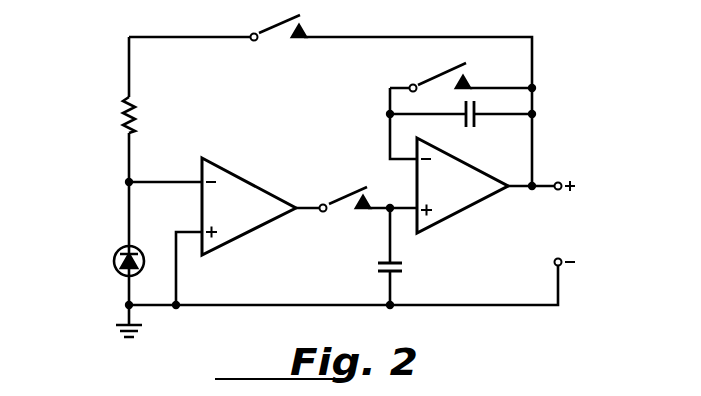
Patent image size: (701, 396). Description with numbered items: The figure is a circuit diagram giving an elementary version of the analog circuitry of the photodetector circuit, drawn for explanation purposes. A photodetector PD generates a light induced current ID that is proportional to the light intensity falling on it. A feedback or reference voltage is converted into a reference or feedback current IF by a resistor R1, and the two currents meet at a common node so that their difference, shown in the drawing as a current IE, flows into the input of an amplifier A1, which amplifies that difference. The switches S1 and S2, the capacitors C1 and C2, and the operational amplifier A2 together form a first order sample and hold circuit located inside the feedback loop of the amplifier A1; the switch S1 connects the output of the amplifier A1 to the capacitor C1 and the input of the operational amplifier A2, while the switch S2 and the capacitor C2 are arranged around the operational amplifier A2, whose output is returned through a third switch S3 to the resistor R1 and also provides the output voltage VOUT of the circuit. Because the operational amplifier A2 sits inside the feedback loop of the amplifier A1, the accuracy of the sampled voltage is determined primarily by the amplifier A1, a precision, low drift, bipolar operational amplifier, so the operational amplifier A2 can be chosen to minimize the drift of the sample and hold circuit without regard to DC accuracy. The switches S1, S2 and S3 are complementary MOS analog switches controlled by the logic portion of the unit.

The resistor R1 is at (124, 112).
The photodetector PD is at (113, 267).
The amplifier A1 is at (250, 216).
The operational amplifier A2 is at (459, 196).
The switch S1 is at (345, 210).
The switch S2 is at (432, 78).
The switch S3 is at (284, 31).
The capacitor C1 is at (402, 273).
The capacitor C2 is at (477, 120).
The feedback current IF is at (115, 137).
The light induced current ID is at (115, 190).
The error current I_E IE is at (176, 172).
The output voltage V_OUT VOUT is at (576, 230).